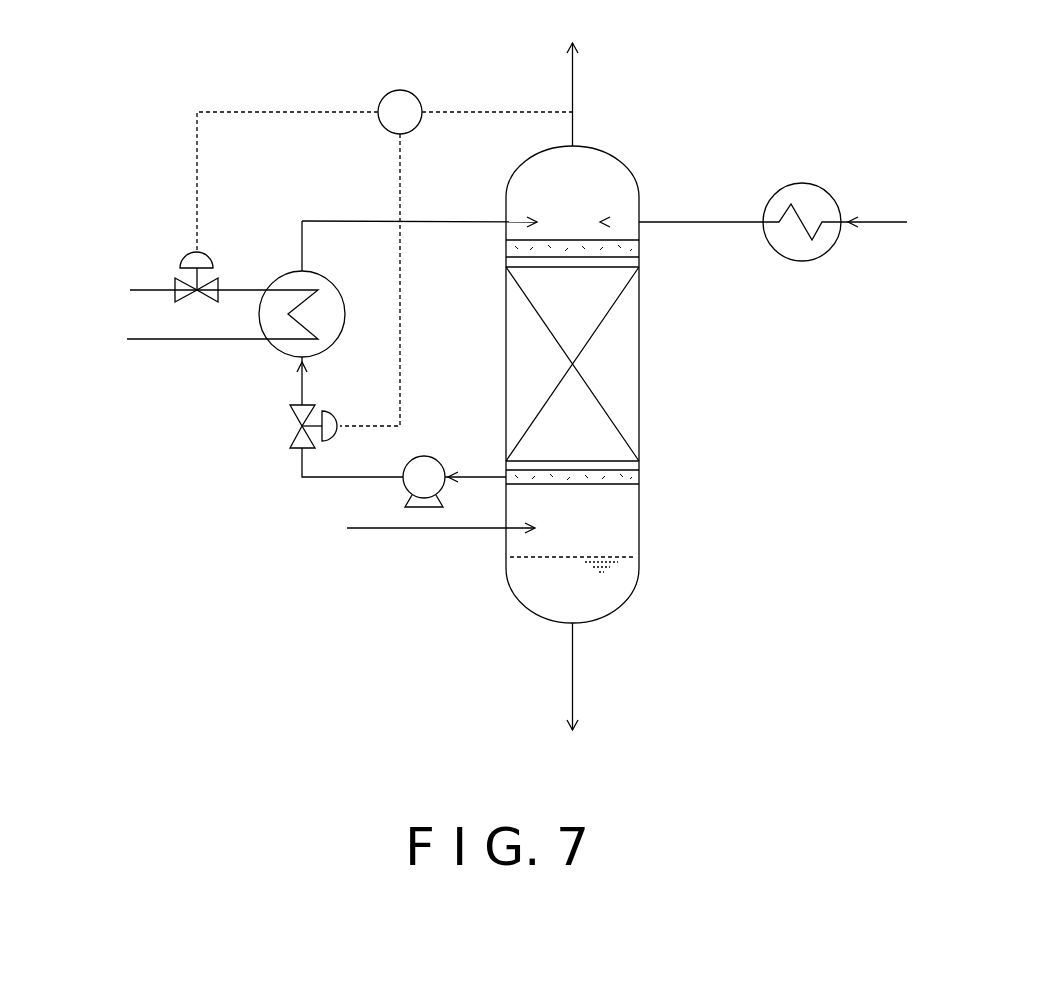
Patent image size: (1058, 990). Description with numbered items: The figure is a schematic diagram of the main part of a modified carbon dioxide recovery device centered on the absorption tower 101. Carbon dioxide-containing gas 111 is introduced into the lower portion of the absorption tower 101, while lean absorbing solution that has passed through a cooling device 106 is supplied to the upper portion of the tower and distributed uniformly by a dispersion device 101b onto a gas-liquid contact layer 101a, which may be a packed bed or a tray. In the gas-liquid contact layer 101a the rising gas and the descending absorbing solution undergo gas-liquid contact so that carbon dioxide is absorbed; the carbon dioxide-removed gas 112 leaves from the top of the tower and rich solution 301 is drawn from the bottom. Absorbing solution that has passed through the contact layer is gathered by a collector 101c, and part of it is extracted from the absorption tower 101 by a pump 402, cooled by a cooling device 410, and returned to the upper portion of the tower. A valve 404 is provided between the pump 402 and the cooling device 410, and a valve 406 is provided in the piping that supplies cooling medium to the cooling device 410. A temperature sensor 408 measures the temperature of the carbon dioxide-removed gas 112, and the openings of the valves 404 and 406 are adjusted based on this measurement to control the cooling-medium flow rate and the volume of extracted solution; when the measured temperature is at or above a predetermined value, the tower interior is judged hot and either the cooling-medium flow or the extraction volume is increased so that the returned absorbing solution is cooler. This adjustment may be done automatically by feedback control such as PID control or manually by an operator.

The absorption tower 101 is at (610, 158).
The gas-liquid contact layer 101a is at (623, 360).
The dispersion device 101b is at (640, 245).
The collector 101c is at (637, 473).
The cooling device 106 is at (802, 182).
The carbon dioxide-containing gas 111 is at (403, 530).
The carbon dioxide-removed gas 112 is at (574, 80).
The rich solution 301 is at (568, 687).
The pump 402 is at (422, 452).
The valve 404 is at (288, 438).
The valve 406 is at (177, 283).
The temperature sensor 408 is at (400, 88).
The cooling device 410 is at (285, 355).